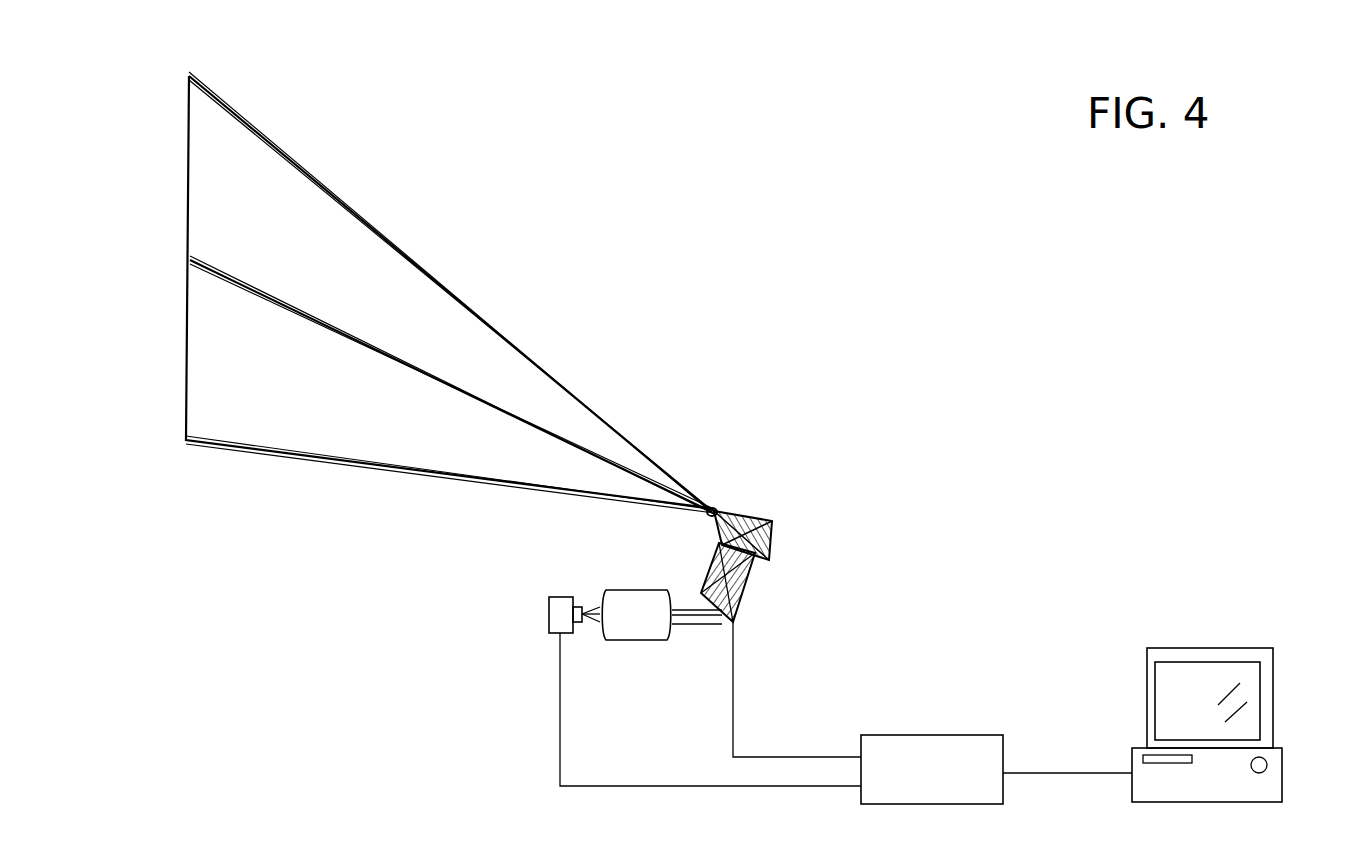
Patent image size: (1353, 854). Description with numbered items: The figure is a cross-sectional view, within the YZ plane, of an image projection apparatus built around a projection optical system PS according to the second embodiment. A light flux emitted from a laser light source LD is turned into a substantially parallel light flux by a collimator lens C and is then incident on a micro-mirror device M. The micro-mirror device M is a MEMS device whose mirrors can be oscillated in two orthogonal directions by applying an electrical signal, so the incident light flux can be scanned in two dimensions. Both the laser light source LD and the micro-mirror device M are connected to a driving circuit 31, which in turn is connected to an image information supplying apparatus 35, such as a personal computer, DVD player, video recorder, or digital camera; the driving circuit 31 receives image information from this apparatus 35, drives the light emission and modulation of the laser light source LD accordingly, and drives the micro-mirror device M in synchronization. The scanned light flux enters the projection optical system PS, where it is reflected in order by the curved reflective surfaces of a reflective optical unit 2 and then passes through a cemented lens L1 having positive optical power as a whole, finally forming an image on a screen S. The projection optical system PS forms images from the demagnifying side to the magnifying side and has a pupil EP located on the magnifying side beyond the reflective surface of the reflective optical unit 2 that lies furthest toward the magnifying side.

The screen S is at (190, 203).
The cemented lens L1 is at (717, 508).
The pupil EP is at (700, 524).
The reflective optical unit 2 is at (757, 507).
The micro-mirror device M is at (735, 620).
The projection optical system PS is at (783, 587).
The laser light source LD is at (548, 613).
The collimator lens C is at (635, 640).
The driving circuit 31 is at (973, 735).
The image information supplying apparatus 35 is at (1273, 700).